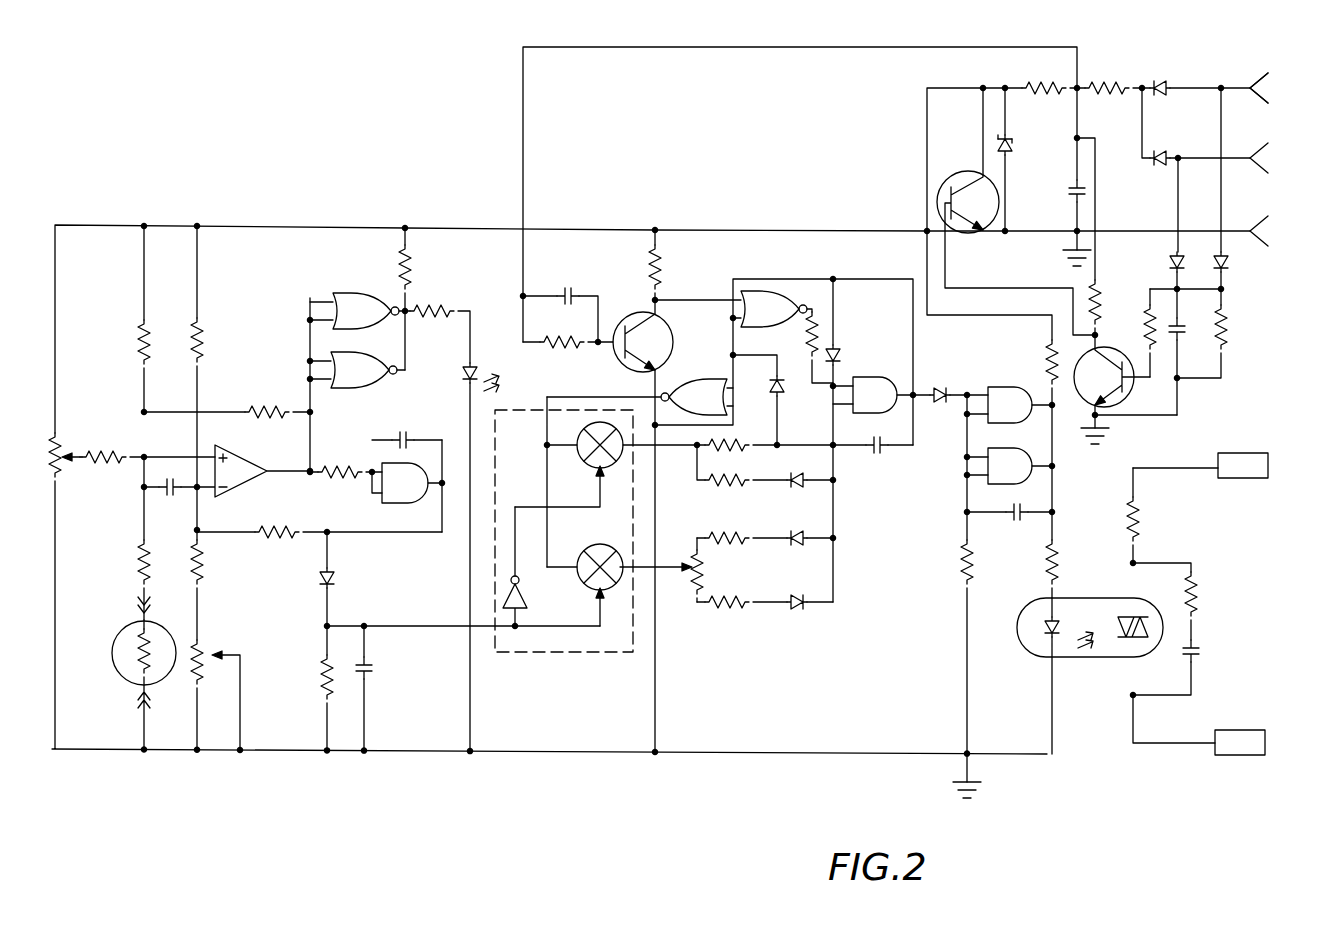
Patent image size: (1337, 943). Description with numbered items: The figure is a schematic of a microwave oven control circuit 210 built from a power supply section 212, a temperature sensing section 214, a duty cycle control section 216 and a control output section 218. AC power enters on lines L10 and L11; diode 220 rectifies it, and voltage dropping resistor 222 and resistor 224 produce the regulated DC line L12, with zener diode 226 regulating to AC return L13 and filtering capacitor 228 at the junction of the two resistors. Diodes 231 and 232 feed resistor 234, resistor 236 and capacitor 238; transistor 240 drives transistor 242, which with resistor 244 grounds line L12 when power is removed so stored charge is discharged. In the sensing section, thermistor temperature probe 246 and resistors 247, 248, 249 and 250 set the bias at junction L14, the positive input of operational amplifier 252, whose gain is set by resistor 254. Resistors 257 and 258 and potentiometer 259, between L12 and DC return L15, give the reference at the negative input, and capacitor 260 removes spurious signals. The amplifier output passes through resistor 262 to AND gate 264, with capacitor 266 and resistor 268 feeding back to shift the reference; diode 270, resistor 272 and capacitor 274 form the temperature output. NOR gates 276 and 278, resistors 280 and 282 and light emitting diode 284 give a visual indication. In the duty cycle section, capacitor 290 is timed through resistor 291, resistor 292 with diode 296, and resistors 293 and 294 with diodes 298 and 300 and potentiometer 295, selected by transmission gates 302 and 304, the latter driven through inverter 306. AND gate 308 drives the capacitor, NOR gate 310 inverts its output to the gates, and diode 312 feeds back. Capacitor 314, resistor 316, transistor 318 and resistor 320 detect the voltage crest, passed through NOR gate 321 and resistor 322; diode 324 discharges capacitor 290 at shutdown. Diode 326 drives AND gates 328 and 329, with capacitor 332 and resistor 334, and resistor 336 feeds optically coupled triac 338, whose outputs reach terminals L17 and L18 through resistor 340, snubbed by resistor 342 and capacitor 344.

The control circuit 210 is at (402, 172).
The power supply section 212 is at (1157, 156).
The temperature sensing section 214 is at (334, 439).
The duty cycle control section for the microwave power source 216 is at (702, 497).
The control output section 218 is at (1118, 499).
The diode 220 is at (1157, 85).
The voltage dropping resistor 222 is at (1132, 84).
The resistor 224 is at (1022, 84).
The zener diode 226 is at (1012, 145).
The filtering capacitor 228 is at (1072, 191).
The diode 231 is at (1168, 260).
The diode 232 is at (1229, 264).
The resistor 234 is at (1140, 330).
The resistor 236 is at (1224, 335).
The capacitor 238 is at (1188, 322).
The transistor 240 is at (1110, 412).
The transistor 242 is at (956, 187).
The resistor 244 is at (1090, 290).
The thermistor temperature probe 246 is at (122, 637).
The resistor 247 is at (136, 549).
The resistor 248 is at (138, 333).
The resistor 249 is at (122, 466).
The resistor 250 is at (60, 448).
The operational amplifier 252 is at (255, 483).
The resistor 254 is at (258, 414).
The resistor 257 is at (200, 332).
The resistor 258 is at (200, 558).
The potentiometer 259 is at (200, 651).
The capacitor 260 is at (170, 492).
The resistor 262 is at (326, 475).
The dual input AND gate 264 is at (404, 504).
The capacitor 266 is at (412, 433).
The resistor 268 is at (292, 535).
The diode 270 is at (318, 590).
The resistor 272 is at (318, 670).
The capacitor 274 is at (366, 670).
The NOR gate 276 is at (392, 355).
The NOR gate 278 is at (360, 290).
The resistor 280 is at (410, 266).
The resistor 282 is at (468, 306).
The light emitting diode 284 is at (466, 374).
The capacitor 290 is at (876, 454).
The resistor 291 is at (736, 443).
The resistor 292 is at (736, 479).
The resistor 293 is at (728, 536).
The resistor 294 is at (724, 608).
The potentiometer 295 is at (685, 570).
The diode 296 is at (814, 473).
The diode 298 is at (814, 534).
The diode 300 is at (793, 598).
The digitally controlled analog transmission gate 302 is at (594, 469).
The digitally controlled analog transmission gate 304 is at (606, 537).
The inverter 306 is at (522, 591).
The AND gate 308 is at (904, 374).
The NOR gate 310 is at (718, 380).
The diode 312 is at (840, 343).
The capacitor 314 is at (582, 274).
The resistor 316 is at (584, 354).
The transistor 318 is at (646, 313).
The resistor 320 is at (658, 266).
The NOR gate 321 is at (798, 281).
The resistor 322 is at (806, 331).
The diode 324 is at (780, 399).
The diode 326 is at (958, 378).
The AND gate 328 is at (1034, 385).
The AND gate 329 is at (1034, 448).
The capacitor 332 is at (1028, 518).
The resistor 334 is at (962, 570).
The resistor 336 is at (1056, 552).
The optically coupled triac 338 is at (1110, 606).
The resistor 340 is at (1138, 524).
The resistor 342 is at (1192, 600).
The capacitor 344 is at (1198, 658).
The line L10 is at (1259, 78).
The line L11 is at (1242, 152).
The output line L12 is at (928, 108).
The AC return L13 is at (1242, 224).
The junction L14 is at (146, 456).
The DC return L15 is at (283, 752).
The output terminal L17 is at (1248, 728).
The output terminal L18 is at (1254, 450).